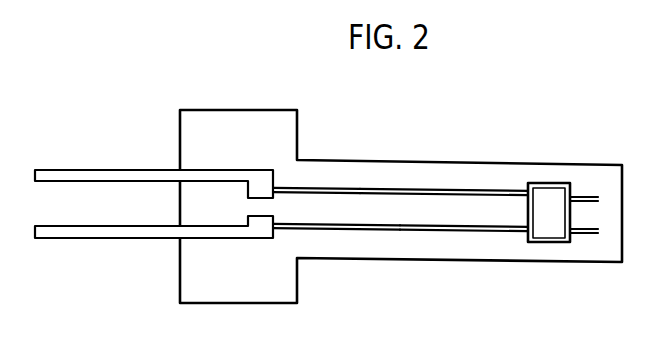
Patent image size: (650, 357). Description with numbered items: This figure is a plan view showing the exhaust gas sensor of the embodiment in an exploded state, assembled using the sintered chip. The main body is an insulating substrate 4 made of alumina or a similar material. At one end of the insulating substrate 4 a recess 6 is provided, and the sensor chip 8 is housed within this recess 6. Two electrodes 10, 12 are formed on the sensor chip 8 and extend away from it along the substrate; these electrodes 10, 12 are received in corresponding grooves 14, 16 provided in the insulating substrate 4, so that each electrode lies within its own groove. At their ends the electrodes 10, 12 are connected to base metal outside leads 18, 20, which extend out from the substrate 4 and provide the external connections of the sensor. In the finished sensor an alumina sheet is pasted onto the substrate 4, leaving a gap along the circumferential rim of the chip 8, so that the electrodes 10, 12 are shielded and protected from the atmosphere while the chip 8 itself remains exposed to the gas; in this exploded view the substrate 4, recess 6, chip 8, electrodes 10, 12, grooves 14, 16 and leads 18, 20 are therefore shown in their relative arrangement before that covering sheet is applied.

The insulating substrate 4 is at (482, 267).
The recess 6 is at (562, 243).
The sensor chip 8 is at (552, 222).
The electrode 10 is at (418, 194).
The electrode 12 is at (455, 230).
The groove 14 is at (360, 190).
The groove 16 is at (380, 229).
The base metal outside lead 18 is at (100, 168).
The base metal outside lead 20 is at (115, 242).